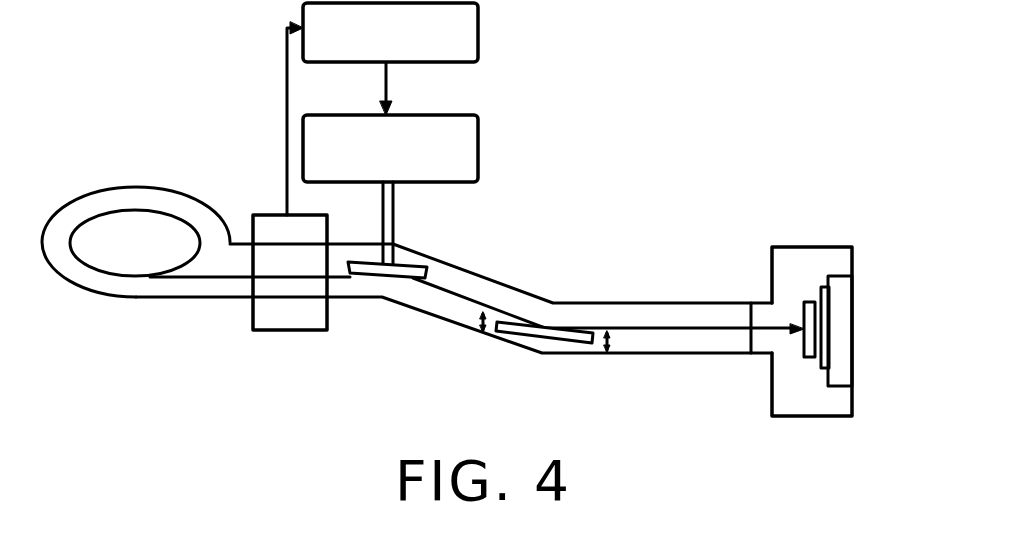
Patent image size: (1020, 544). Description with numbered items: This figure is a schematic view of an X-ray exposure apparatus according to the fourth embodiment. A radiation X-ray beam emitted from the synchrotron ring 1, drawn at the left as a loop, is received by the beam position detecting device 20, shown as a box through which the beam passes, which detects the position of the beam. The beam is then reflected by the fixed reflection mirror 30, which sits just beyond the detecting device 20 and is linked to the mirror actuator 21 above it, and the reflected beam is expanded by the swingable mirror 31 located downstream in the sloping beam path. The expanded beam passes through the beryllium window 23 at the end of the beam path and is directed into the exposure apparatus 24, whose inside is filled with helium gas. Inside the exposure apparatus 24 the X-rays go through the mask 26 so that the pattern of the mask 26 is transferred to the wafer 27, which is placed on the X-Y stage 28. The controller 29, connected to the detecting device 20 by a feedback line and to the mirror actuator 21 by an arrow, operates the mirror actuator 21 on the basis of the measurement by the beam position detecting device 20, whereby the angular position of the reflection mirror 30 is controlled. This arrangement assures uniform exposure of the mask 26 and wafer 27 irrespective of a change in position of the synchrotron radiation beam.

The synchrotron ring 1 is at (145, 227).
The beam position detecting device 20 is at (293, 331).
The mirror actuator 21 is at (478, 156).
The beryllium window 23 is at (750, 315).
The exposure apparatus 24 is at (782, 247).
The mask 26 is at (805, 302).
The wafer 27 is at (823, 287).
The X-Y stage 28 is at (840, 313).
The controller 29 is at (478, 37).
The fixed reflection mirror 30 is at (413, 265).
The swingable mirror 31 is at (572, 338).